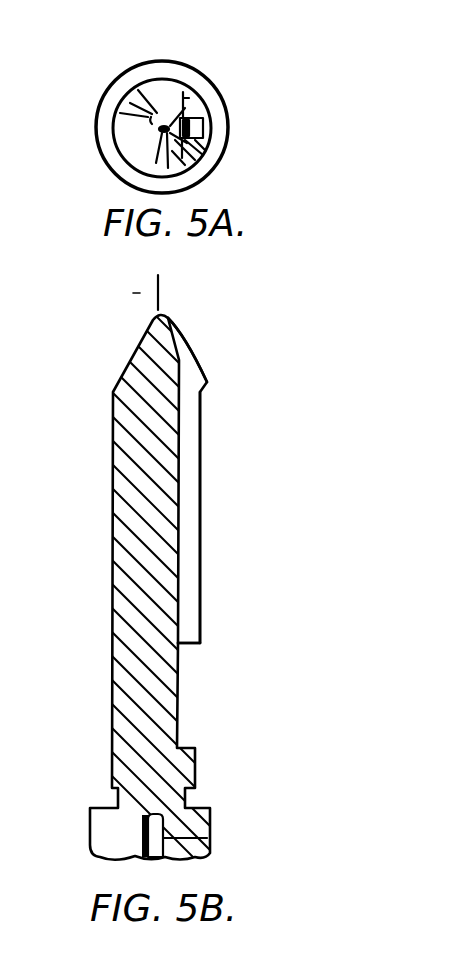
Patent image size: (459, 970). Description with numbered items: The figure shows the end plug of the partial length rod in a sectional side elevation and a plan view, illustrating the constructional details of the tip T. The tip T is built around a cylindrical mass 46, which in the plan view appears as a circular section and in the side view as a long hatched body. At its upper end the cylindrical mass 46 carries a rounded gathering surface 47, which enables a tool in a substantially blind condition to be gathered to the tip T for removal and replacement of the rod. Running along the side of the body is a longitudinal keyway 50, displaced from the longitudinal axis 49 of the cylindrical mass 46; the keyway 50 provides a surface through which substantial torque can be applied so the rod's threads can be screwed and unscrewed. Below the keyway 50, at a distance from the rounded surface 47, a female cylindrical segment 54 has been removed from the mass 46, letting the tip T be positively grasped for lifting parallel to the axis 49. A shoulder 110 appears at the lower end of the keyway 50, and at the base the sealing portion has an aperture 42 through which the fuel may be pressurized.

In FIG. 5B, the aperture 42 is at (207, 840).
In FIG. 5A, the cylindrical mass 46 is at (205, 163).
In FIG. 5B, the cylindrical mass 46 is at (112, 513).
In FIG. 5B, the rounded gathering surface 47 is at (186, 339).
In FIG. 5B, the longitudinal axis 49 is at (159, 291).
In FIG. 5A, the longitudinal keyway 50 is at (203, 128).
In FIG. 5B, the longitudinal keyway 50 is at (185, 520).
In FIG. 5A, the female cylindrical segment 54 is at (204, 72).
In FIG. 5B, the shoulder 110 is at (180, 648).
In FIG. 5A, the tip T is at (213, 93).
In FIG. 5B, the tip T is at (202, 622).